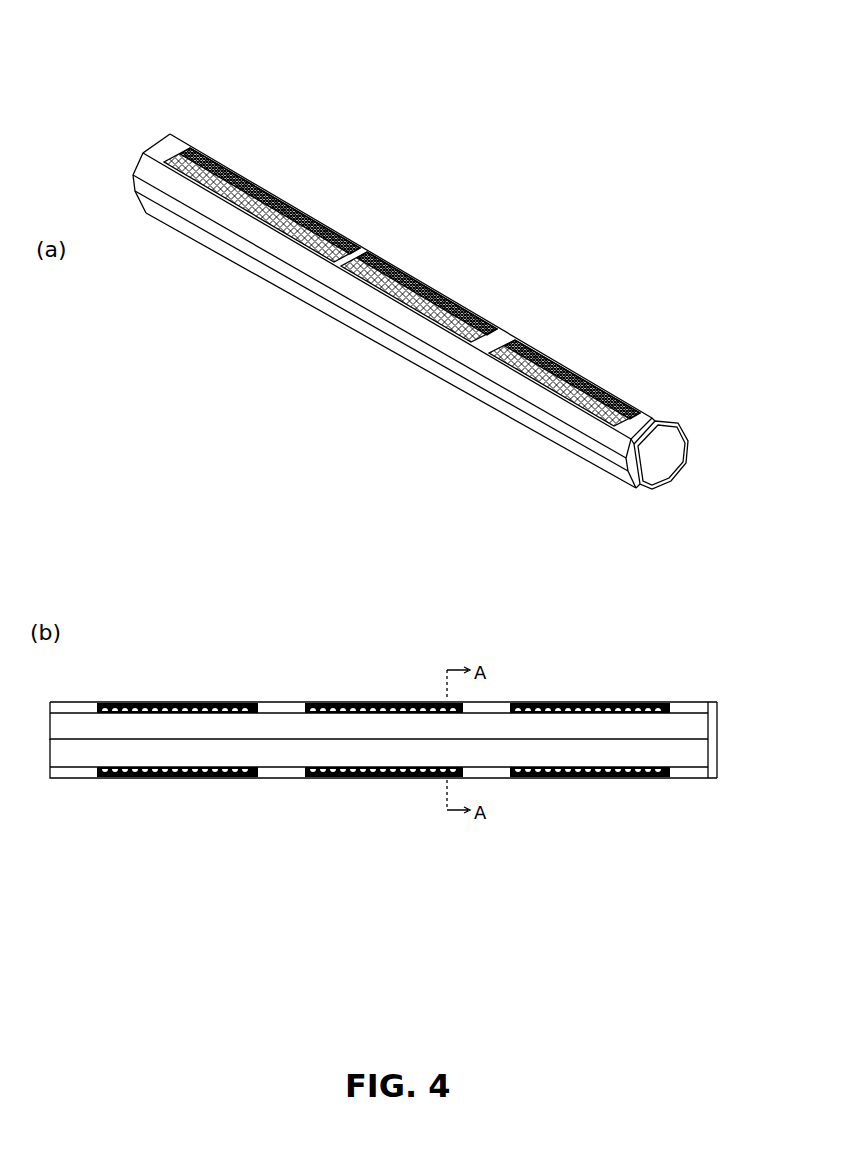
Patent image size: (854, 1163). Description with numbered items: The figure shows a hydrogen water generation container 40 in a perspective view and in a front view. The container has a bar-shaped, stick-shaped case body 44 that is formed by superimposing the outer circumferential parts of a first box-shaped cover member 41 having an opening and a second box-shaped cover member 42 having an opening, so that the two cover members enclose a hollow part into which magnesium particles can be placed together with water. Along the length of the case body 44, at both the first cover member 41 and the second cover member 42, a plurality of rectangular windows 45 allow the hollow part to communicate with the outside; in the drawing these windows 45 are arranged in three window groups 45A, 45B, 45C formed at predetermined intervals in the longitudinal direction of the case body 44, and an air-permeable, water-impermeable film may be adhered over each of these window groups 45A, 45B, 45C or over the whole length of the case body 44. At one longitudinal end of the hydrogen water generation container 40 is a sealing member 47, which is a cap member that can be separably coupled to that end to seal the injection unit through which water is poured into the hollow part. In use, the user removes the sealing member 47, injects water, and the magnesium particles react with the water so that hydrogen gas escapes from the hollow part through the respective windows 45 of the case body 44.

The hydrogen water generation container 40 is at (128, 92).
The first cover member 41 is at (215, 218).
The second cover member 42 is at (396, 346).
The case body 44 is at (526, 304).
The windows 45 is at (343, 256).
The window group 45A is at (345, 226).
The window group 45B is at (500, 328).
The window group 45C is at (655, 408).
The sealing member 47 is at (656, 462).